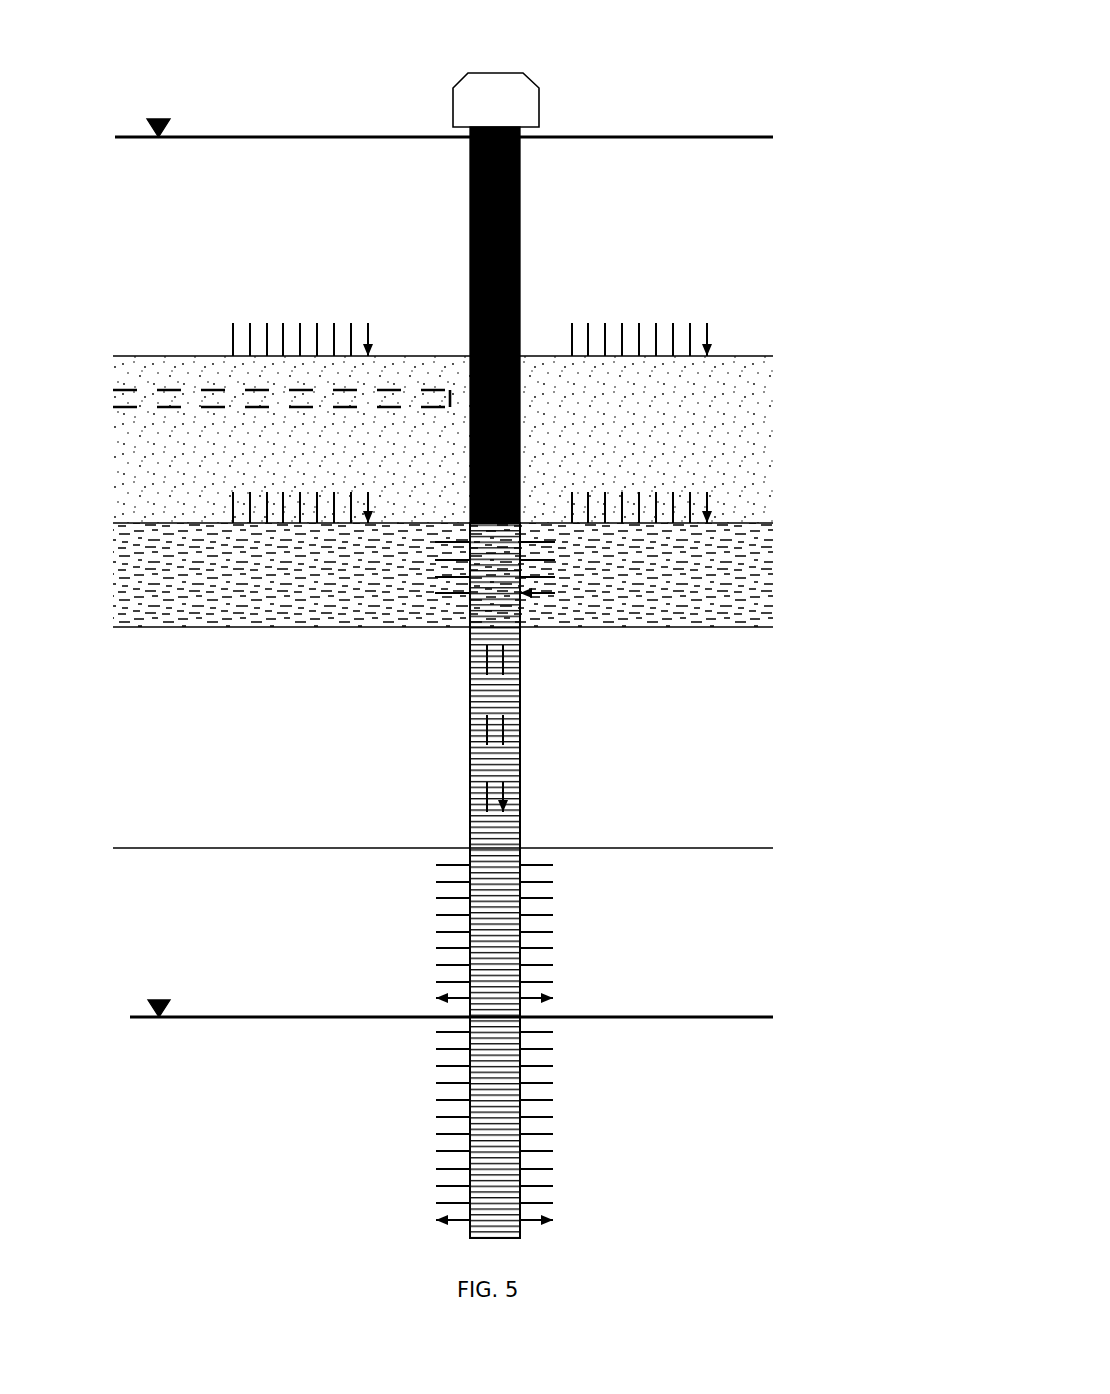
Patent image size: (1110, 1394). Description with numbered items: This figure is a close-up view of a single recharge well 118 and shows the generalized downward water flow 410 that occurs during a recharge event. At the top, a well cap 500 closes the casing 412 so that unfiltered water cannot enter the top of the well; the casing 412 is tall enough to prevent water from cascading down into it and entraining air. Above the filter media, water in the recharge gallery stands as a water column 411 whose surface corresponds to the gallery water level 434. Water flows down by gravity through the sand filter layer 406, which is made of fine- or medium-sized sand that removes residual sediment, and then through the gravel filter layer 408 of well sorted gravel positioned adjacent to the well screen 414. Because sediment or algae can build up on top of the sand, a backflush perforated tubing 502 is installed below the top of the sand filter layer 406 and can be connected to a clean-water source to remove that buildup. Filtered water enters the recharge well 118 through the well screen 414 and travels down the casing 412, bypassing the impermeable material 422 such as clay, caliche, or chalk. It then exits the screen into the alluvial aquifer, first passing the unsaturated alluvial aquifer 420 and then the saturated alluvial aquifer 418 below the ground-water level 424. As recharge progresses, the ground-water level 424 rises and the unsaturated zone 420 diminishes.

The recharge well 118 is at (502, 60).
The well cap 500 is at (453, 103).
The water level in the recharge gallery 434 is at (200, 137).
The water column 411 is at (298, 230).
The casing 412 is at (521, 252).
The backflush perforated tubing 502 is at (113, 390).
The arrows indicating water flow direction 410 is at (708, 330).
The sand filter layer 406 is at (763, 420).
The gravel filter layer 408 is at (765, 580).
The well screen 414 is at (470, 760).
The impermeable material 422 is at (683, 738).
The unsaturated alluvial aquifer 420 is at (693, 941).
The water level (ground water) 424 is at (259, 1016).
The saturated alluvial aquifer 418 is at (693, 1133).